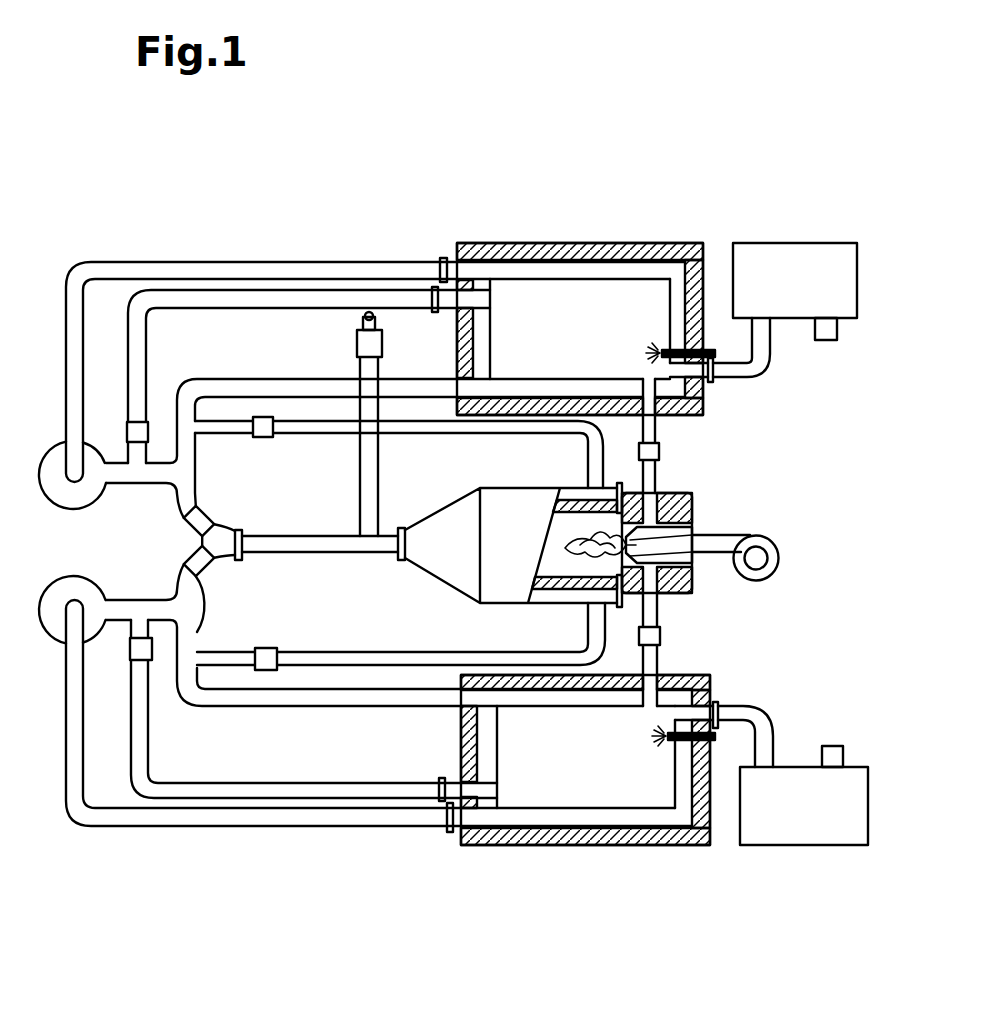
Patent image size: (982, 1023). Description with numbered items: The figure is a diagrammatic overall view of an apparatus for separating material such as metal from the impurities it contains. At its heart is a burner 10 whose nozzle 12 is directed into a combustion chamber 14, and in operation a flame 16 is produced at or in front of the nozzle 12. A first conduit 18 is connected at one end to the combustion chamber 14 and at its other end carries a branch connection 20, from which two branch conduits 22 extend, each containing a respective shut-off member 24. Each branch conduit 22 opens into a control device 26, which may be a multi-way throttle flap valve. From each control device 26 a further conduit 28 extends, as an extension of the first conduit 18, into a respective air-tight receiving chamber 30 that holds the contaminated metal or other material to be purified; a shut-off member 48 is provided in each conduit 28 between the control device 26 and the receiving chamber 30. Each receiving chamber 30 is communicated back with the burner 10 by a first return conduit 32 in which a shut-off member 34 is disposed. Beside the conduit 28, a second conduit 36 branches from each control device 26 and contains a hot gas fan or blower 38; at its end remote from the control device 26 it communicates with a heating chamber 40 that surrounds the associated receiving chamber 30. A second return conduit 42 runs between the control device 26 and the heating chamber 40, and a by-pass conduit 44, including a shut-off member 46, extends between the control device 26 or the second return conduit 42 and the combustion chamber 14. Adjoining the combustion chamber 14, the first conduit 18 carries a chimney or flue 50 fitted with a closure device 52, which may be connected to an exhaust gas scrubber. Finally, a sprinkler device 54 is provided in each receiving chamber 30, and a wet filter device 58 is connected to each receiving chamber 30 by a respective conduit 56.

The burner 10 is at (766, 530).
The nozzle 12 is at (688, 530).
The combustion chamber 14 is at (490, 550).
The flame 16 is at (580, 567).
The first conduit 18 is at (350, 553).
The branch connection 20 is at (222, 547).
The branch conduits 22 is at (205, 563).
The shut-off members 24 is at (215, 515).
The control device 26 is at (190, 473).
The further conduit 28 is at (330, 297).
The receiving chamber 30 is at (570, 339).
The first return conduit 32 is at (657, 478).
The shut-off member 34 is at (660, 452).
The second conduit 36 is at (217, 268).
The hot gas fan 38 is at (68, 585).
The heating chamber 40 is at (542, 270).
The second return conduit 42 is at (327, 397).
The by-pass conduit 44 is at (482, 430).
The shut-off member 46 is at (265, 418).
The shut-off member 48 is at (127, 428).
The chimney or flue 50 is at (380, 468).
The closure device 52 is at (358, 345).
The sprinkler device 54 is at (672, 350).
The conduit 56 is at (763, 367).
The wet filter device 58 is at (785, 260).